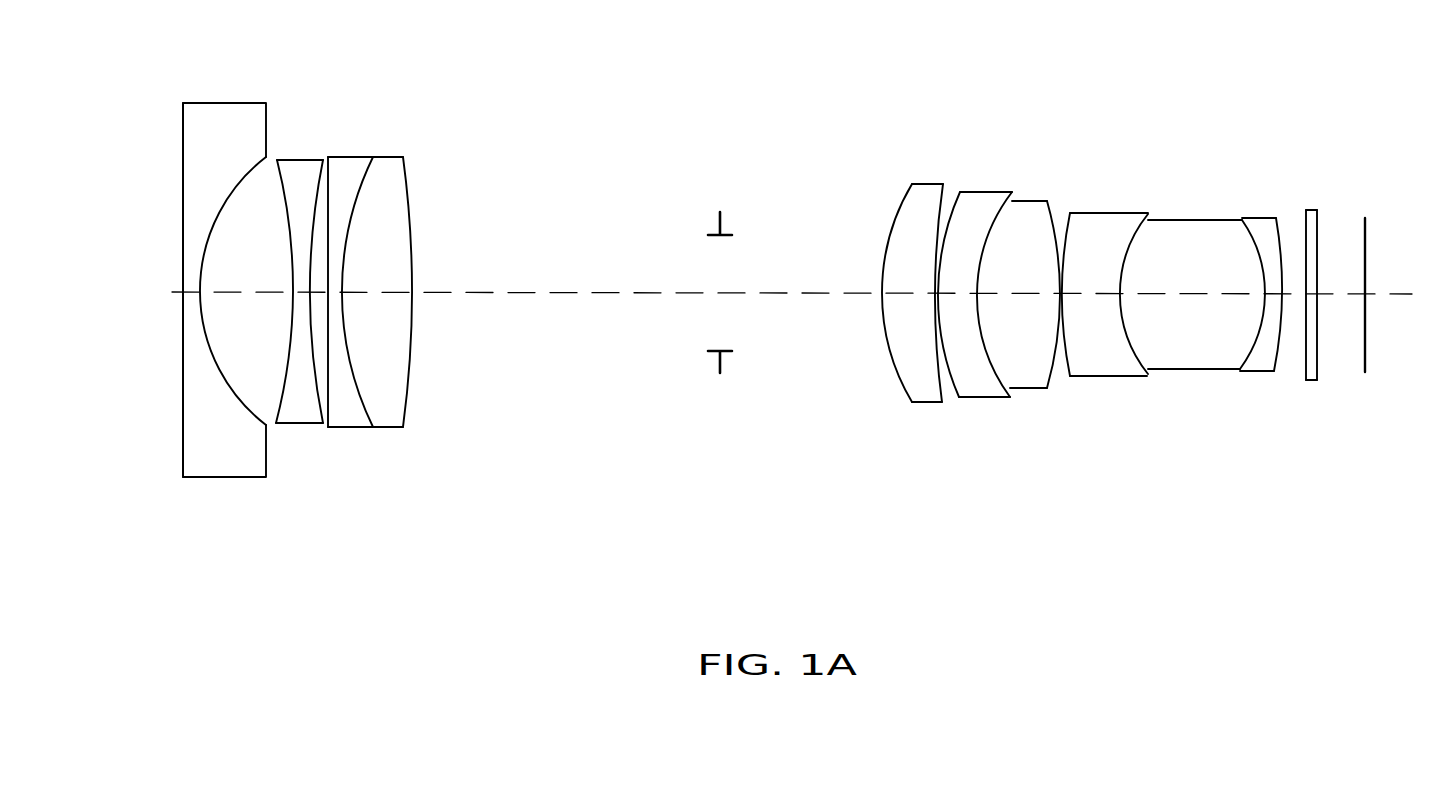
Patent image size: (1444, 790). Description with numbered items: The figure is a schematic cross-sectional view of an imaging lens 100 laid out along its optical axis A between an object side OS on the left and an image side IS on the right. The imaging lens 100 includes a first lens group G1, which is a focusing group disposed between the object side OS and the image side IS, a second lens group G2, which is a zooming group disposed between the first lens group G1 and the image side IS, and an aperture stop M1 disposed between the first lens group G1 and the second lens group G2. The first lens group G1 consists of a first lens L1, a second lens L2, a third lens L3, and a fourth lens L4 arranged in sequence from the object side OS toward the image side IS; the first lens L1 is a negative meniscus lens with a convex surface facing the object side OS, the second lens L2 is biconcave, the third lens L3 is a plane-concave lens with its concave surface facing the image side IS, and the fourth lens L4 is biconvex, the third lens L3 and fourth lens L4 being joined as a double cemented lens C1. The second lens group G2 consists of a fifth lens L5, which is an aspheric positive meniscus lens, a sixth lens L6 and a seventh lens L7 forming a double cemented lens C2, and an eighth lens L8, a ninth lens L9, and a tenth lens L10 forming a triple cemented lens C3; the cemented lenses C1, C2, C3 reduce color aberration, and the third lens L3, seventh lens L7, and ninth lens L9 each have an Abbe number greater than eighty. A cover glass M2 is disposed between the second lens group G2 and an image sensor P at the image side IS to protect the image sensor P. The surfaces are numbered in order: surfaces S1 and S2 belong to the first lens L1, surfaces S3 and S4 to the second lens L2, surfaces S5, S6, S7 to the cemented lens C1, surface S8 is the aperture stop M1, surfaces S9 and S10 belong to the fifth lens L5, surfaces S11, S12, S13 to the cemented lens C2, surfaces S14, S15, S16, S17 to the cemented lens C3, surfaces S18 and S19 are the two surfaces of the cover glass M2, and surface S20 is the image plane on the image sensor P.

The imaging lens 100 is at (1368, 557).
The optical axis A is at (150, 317).
The object side OS is at (157, 305).
The image side IS is at (1431, 294).
The first lens group G1 is at (383, 522).
The second lens group G2 is at (1178, 489).
The first lens L1 is at (250, 462).
The second lens L2 is at (300, 414).
The third lens L3 is at (350, 418).
The fourth lens L4 is at (385, 417).
The fifth lens L5 is at (923, 390).
The sixth lens L6 is at (990, 385).
The seventh lens L7 is at (1035, 378).
The eighth lens L8 is at (1108, 360).
The ninth lens L9 is at (1182, 360).
The tenth lens L10 is at (1258, 362).
The cemented lens C1 is at (405, 474).
The cemented lens C2 is at (1080, 442).
The cemented lens C3 is at (1220, 444).
The aperture stop M1 is at (720, 363).
The cover glass M2 is at (1308, 382).
The image sensor P is at (1367, 352).
The surface S1 is at (181, 152).
The surface S2 is at (247, 172).
The surface S3 is at (270, 194).
The surface S4 is at (318, 197).
The surface S5 is at (330, 197).
The surface S6 is at (361, 202).
The surface S7 is at (411, 205).
The surface S8 is at (718, 217).
The surface S9 is at (894, 222).
The surface S10 is at (937, 210).
The surface S11 is at (948, 230).
The surface S12 is at (997, 216).
The surface S13 is at (1053, 212).
The surface S14 is at (1071, 242).
The surface S15 is at (1132, 242).
The surface S16 is at (1257, 253).
The surface S17 is at (1280, 240).
The surface S18 is at (1305, 224).
The surface S19 is at (1318, 242).
The surface S20 is at (1364, 240).